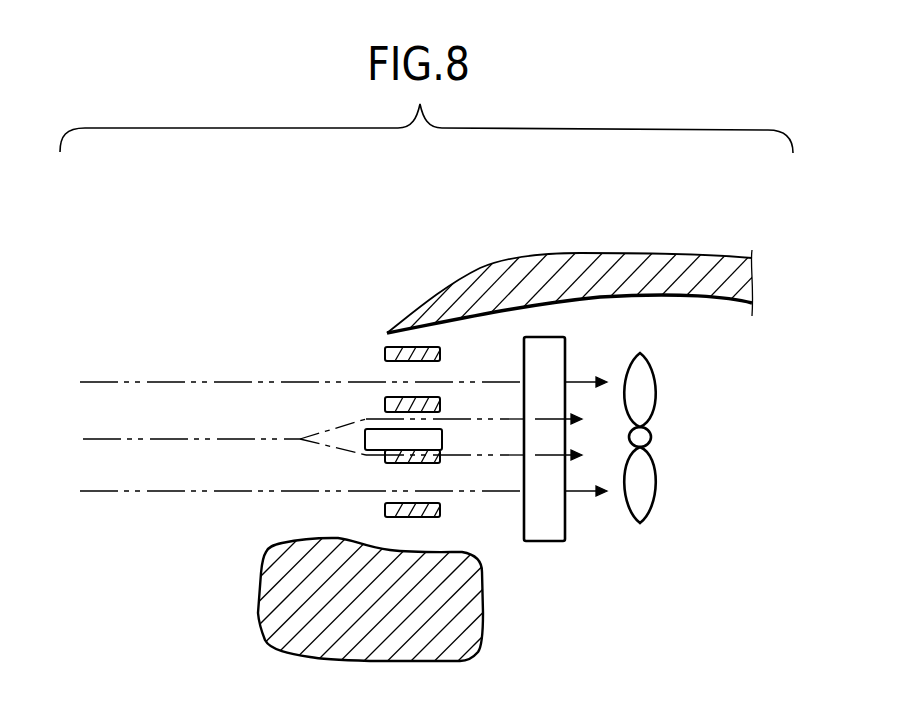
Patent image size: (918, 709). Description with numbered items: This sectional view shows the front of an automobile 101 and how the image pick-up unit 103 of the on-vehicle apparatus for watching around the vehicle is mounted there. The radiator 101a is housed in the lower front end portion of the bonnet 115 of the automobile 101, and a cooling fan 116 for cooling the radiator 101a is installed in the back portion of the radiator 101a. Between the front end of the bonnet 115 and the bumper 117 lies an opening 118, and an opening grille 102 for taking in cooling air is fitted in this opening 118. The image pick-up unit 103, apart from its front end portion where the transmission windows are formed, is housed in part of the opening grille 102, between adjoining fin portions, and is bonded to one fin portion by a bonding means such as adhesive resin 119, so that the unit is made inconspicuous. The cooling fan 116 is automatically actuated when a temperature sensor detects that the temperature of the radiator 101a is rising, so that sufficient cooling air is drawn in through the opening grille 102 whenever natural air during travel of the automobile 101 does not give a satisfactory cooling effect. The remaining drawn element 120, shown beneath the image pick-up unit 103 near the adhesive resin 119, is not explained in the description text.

The lens barrel / housing 101 is at (607, 222).
The plate / image sensor cover 101a is at (552, 543).
The lens group 102 is at (385, 397).
The lens unit 103 is at (366, 428).
The housing wall 115 is at (515, 258).
The fan 116 is at (660, 490).
The member 117 is at (268, 612).
The lens 118 is at (345, 511).
The holder 119 is at (443, 450).
The lens 120 is at (395, 464).